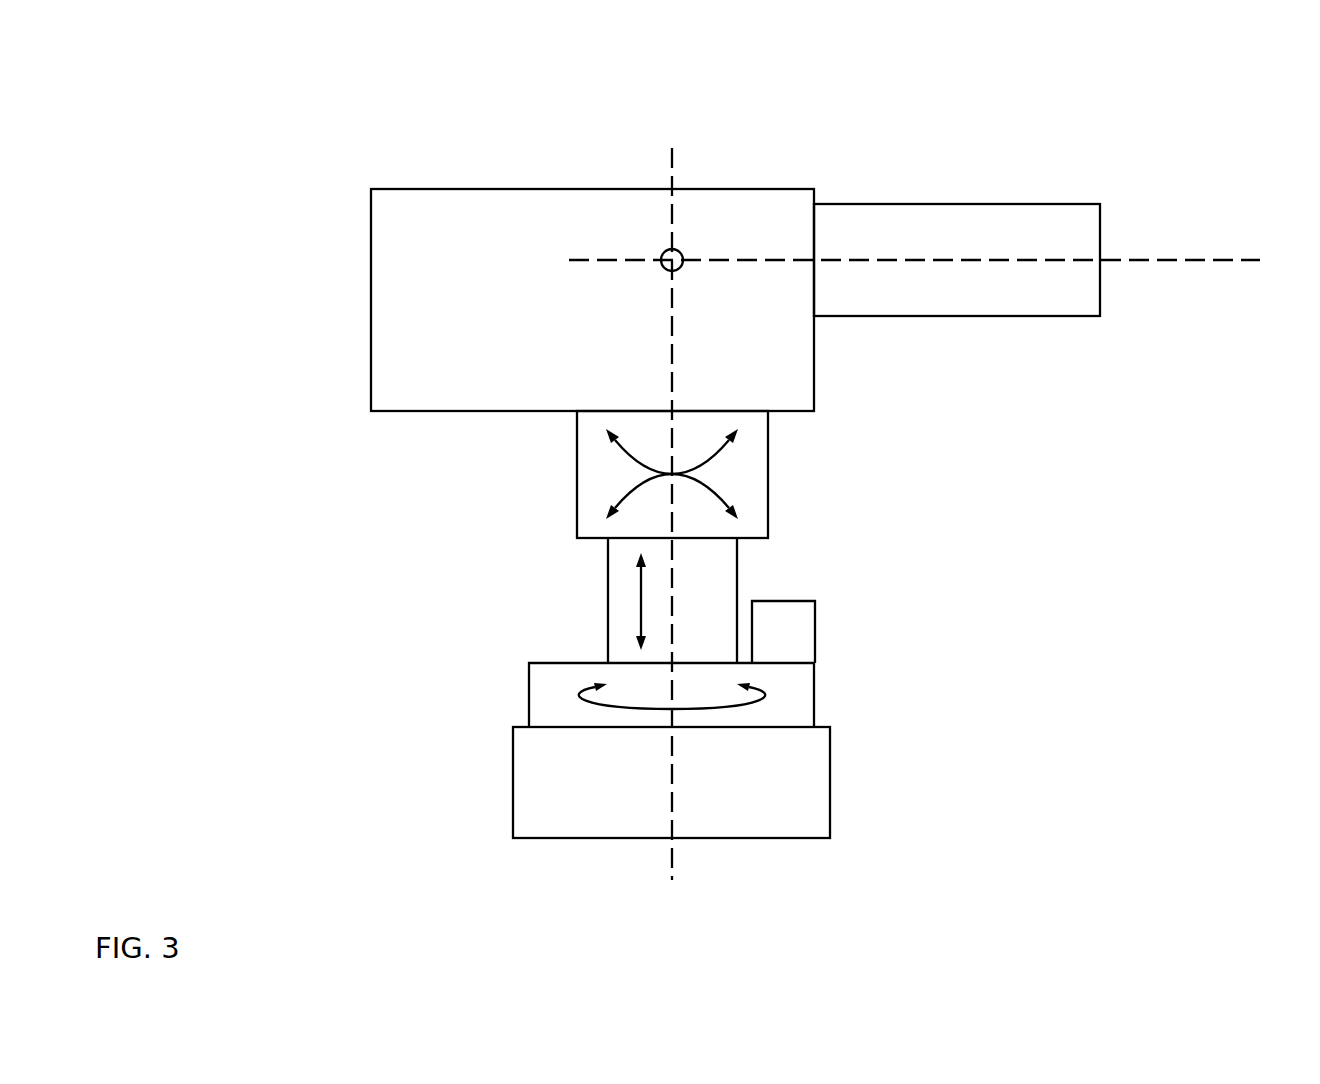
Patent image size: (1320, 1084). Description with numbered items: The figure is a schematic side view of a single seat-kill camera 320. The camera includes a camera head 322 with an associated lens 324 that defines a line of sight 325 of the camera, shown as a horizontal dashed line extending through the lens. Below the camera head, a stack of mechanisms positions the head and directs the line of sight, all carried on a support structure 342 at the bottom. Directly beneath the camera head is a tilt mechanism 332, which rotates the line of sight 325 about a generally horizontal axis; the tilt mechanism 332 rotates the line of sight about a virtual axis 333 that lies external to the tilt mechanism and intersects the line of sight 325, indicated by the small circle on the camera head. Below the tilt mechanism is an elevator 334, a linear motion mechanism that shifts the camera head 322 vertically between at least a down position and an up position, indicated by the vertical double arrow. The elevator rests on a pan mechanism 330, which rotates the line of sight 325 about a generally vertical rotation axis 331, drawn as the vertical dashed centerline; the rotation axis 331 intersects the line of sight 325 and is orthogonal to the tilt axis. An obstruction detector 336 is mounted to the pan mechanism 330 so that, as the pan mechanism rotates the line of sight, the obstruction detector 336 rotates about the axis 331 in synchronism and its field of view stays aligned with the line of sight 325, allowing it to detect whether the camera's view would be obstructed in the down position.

The single seat-kill camera 320 is at (299, 101).
The camera head 322 is at (593, 189).
The lens 324 is at (973, 204).
The line of sight 325 is at (1153, 258).
The virtual axis 333 is at (678, 265).
The tilt mechanism 332 is at (768, 473).
The elevator 334 is at (607, 600).
The obstruction detector 336 is at (783, 601).
The pan mechanism 330 is at (528, 697).
The support structure 342 is at (830, 760).
The rotation axis 331 is at (672, 863).